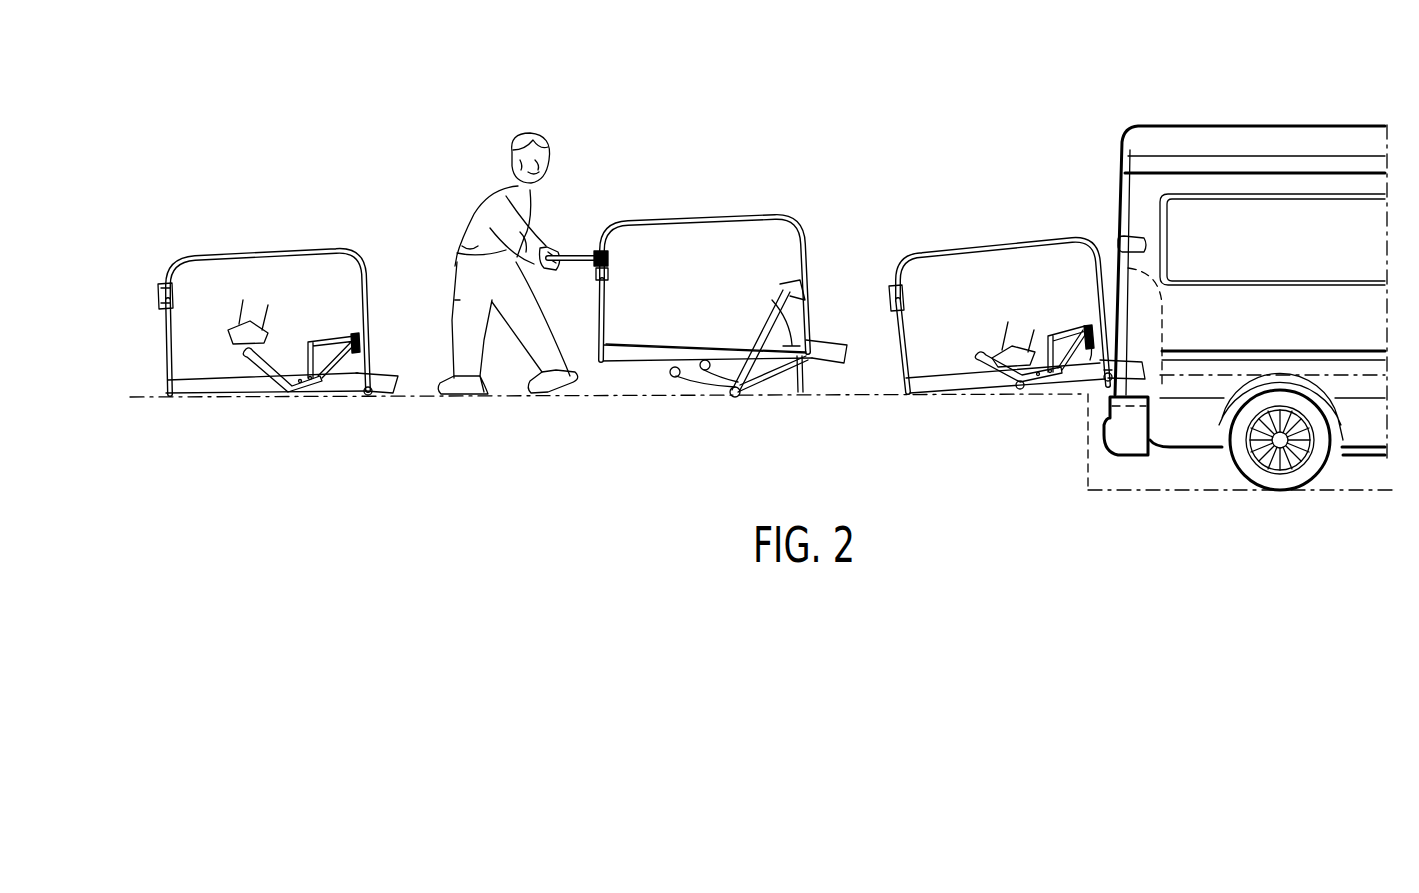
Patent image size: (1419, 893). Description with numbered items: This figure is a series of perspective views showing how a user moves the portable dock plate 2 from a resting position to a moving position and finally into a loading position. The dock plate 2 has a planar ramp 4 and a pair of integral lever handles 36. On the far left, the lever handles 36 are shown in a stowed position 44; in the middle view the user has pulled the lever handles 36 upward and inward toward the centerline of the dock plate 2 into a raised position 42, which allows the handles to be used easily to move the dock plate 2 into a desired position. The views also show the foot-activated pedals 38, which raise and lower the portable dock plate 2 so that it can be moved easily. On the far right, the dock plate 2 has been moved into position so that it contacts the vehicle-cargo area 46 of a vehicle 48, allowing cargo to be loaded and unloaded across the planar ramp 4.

The portable dock plate 2 is at (212, 390).
The planar ramp 4 is at (631, 348).
The lever handles 36 is at (578, 255).
The foot-activated pedals 38 is at (257, 360).
The raised position 42 is at (578, 255).
The stowed position 44 is at (163, 345).
The vehicle-cargo area 46 is at (1106, 378).
The vehicle 48 is at (1268, 143).